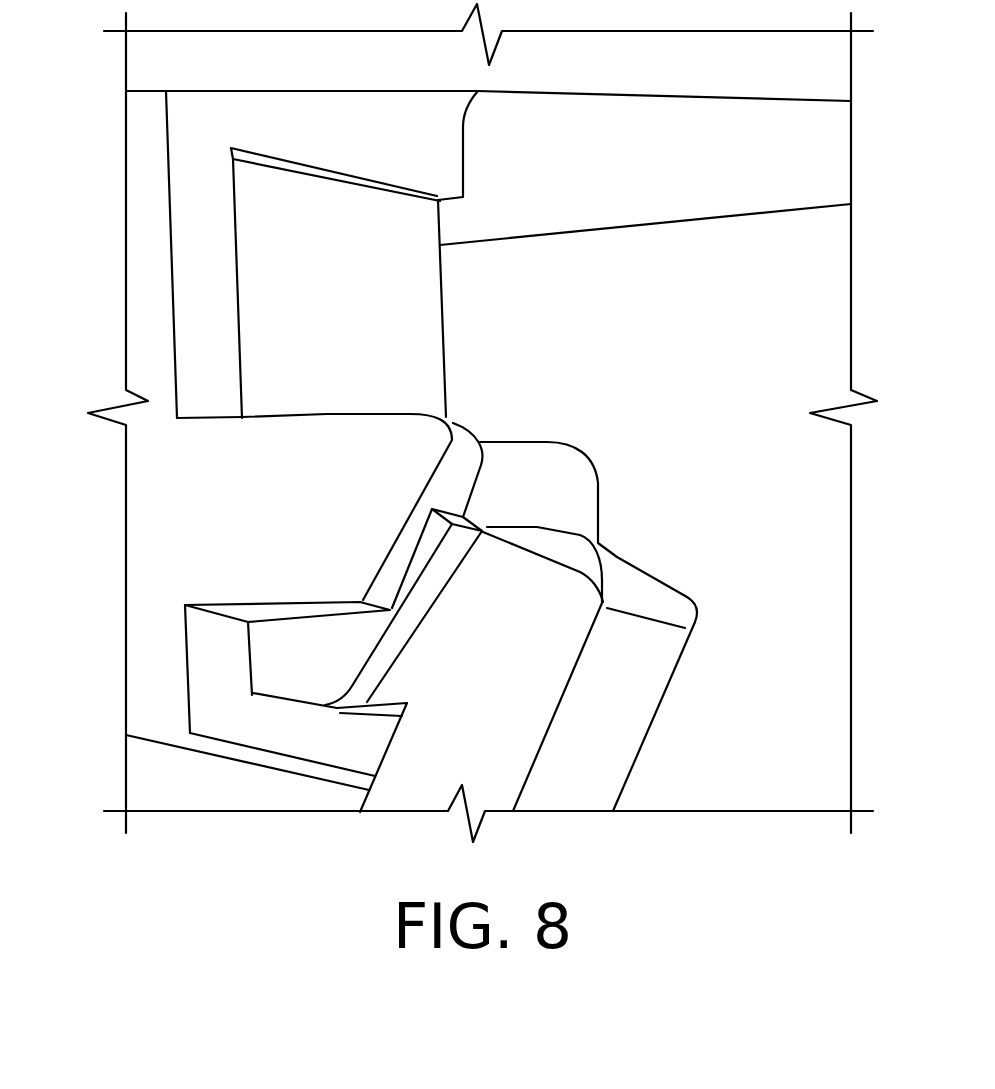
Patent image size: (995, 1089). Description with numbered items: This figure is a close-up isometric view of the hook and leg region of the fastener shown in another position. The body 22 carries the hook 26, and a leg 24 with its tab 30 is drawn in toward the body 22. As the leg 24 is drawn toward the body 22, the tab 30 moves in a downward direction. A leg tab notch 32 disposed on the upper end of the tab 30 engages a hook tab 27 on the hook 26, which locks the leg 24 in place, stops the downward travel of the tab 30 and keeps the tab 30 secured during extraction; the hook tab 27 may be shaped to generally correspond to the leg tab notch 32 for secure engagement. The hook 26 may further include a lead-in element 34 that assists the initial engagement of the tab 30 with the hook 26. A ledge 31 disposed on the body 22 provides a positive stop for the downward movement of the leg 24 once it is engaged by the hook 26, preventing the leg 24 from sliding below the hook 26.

The body 22 is at (200, 230).
The leg 24 is at (633, 705).
The hook 26 is at (268, 518).
The hook tab 27 is at (458, 490).
The tab 30 is at (317, 651).
The ledge 31 is at (272, 697).
The leg tab notch 32 is at (477, 523).
The lead-in element 34 is at (458, 437).